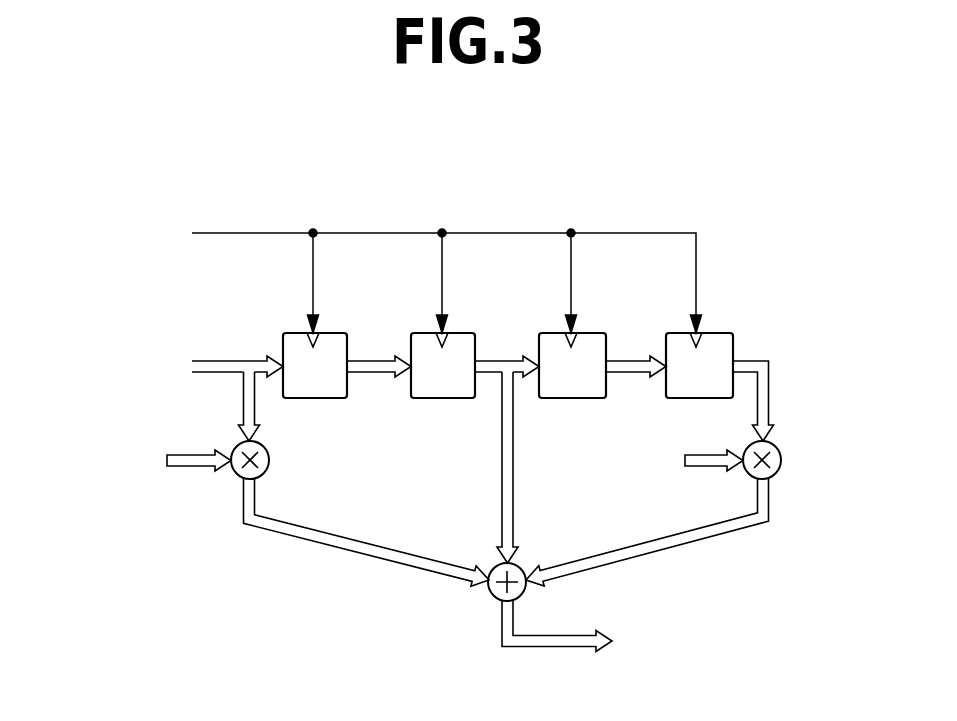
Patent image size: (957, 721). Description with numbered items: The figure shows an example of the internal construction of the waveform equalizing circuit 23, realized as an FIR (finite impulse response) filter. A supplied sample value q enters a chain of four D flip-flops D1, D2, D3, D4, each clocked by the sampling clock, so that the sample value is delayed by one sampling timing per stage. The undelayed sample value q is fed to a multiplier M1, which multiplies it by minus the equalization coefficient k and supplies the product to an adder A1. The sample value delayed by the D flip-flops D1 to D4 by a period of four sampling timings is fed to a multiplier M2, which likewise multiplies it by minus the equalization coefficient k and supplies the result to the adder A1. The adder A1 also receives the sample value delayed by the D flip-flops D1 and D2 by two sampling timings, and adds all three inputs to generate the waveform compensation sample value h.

The waveform equalizing circuit 23 is at (500, 172).
The D flip-flop D1 is at (340, 328).
The D flip-flop D2 is at (469, 328).
The D flip-flop D3 is at (602, 330).
The D flip-flop D4 is at (726, 330).
The multiplier M1 is at (271, 458).
The multiplier M2 is at (782, 460).
The adder A1 is at (518, 565).